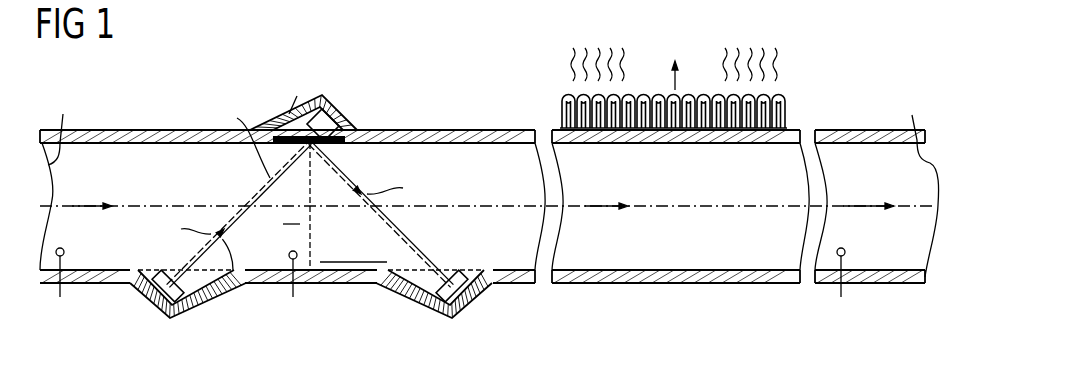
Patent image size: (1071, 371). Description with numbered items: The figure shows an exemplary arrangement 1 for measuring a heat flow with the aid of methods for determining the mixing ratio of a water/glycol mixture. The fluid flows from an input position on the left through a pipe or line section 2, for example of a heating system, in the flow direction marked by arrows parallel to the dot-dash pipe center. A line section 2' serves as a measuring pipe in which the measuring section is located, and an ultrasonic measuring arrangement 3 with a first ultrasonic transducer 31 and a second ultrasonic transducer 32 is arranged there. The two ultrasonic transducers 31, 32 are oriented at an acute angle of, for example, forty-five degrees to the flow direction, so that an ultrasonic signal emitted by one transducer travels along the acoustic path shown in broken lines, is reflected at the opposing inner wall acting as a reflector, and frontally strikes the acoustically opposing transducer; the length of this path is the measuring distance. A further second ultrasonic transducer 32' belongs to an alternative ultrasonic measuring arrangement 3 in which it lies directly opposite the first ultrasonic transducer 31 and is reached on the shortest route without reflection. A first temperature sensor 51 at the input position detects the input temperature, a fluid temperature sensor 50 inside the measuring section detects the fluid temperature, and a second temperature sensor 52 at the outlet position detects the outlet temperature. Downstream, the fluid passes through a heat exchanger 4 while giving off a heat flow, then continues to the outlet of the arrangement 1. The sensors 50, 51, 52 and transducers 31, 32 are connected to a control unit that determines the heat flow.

The arrangement 1 is at (455, 88).
The pipe or line section 2 is at (489, 201).
The line section serving as measuring pipe 2' is at (312, 311).
The ultrasonic measuring arrangement 3 is at (340, 210).
The first ultrasonic transducer 31 is at (183, 310).
The second ultrasonic transducer 32 is at (463, 312).
The further second ultrasonic transducer 32' is at (332, 103).
The heat exchanger 4 is at (785, 98).
The fluid temperature sensor 50 is at (290, 254).
The first temperature sensor 51 is at (64, 254).
The second temperature sensor 52 is at (845, 254).